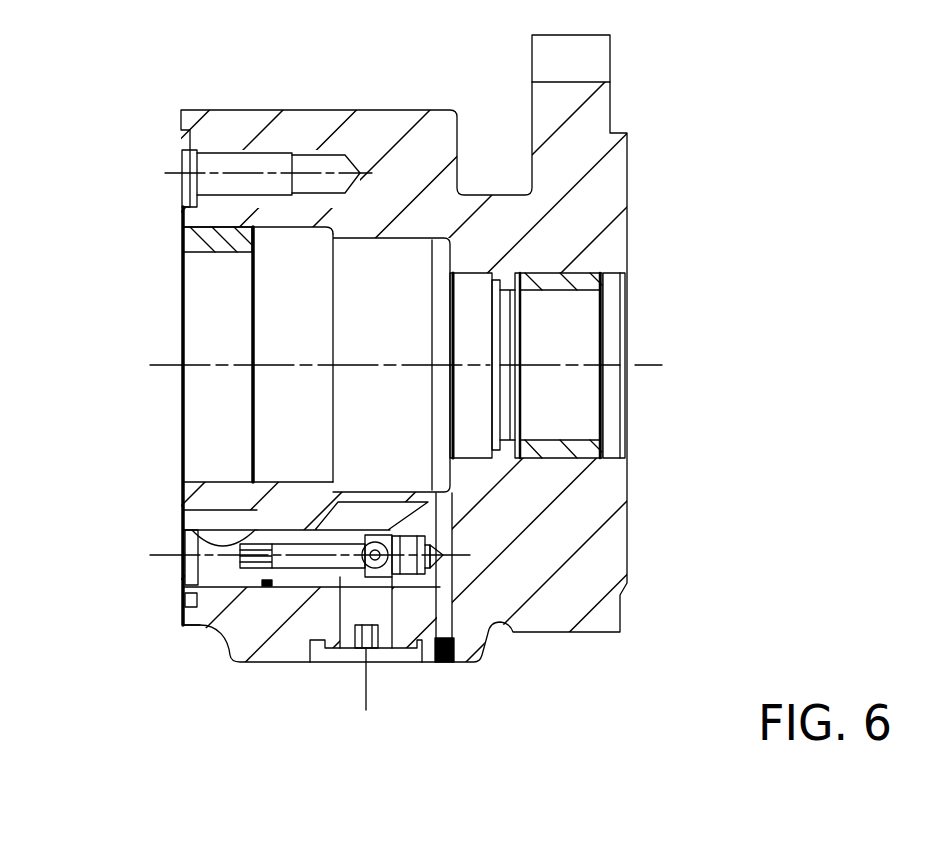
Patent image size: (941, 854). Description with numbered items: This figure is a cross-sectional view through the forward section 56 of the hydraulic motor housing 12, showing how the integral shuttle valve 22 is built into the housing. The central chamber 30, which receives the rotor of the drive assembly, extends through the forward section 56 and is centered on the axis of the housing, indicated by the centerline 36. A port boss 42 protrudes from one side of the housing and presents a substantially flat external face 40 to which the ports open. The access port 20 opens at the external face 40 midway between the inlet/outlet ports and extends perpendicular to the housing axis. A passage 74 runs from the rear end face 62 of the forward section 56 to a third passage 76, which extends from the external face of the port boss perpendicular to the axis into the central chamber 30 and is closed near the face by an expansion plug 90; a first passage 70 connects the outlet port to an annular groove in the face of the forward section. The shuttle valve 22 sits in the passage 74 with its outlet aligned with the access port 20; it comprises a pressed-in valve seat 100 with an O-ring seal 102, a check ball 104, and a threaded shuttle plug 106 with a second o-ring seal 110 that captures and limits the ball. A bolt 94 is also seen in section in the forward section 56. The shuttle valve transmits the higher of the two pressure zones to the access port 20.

The housing 12 is at (670, 168).
The access port 20 is at (387, 662).
The shuttle valve 22 is at (247, 593).
The central chamber 30 is at (399, 439).
The rotational axis 36 is at (662, 362).
The external face 40 is at (290, 662).
The port boss 42 is at (237, 652).
The forward section 56 is at (428, 138).
The rear end face 62 is at (183, 615).
The first passage 70 is at (190, 570).
The passage 74 is at (190, 533).
The third passage 76 is at (445, 612).
The expansion plug 90 is at (444, 664).
The mounting bolt 94 is at (272, 160).
The valve seat 100 is at (430, 563).
The O-ring seal 102 is at (402, 538).
The check ball 104 is at (366, 572).
The threaded shuttle plug 106 is at (200, 536).
The second o-ring seal 110 is at (268, 530).